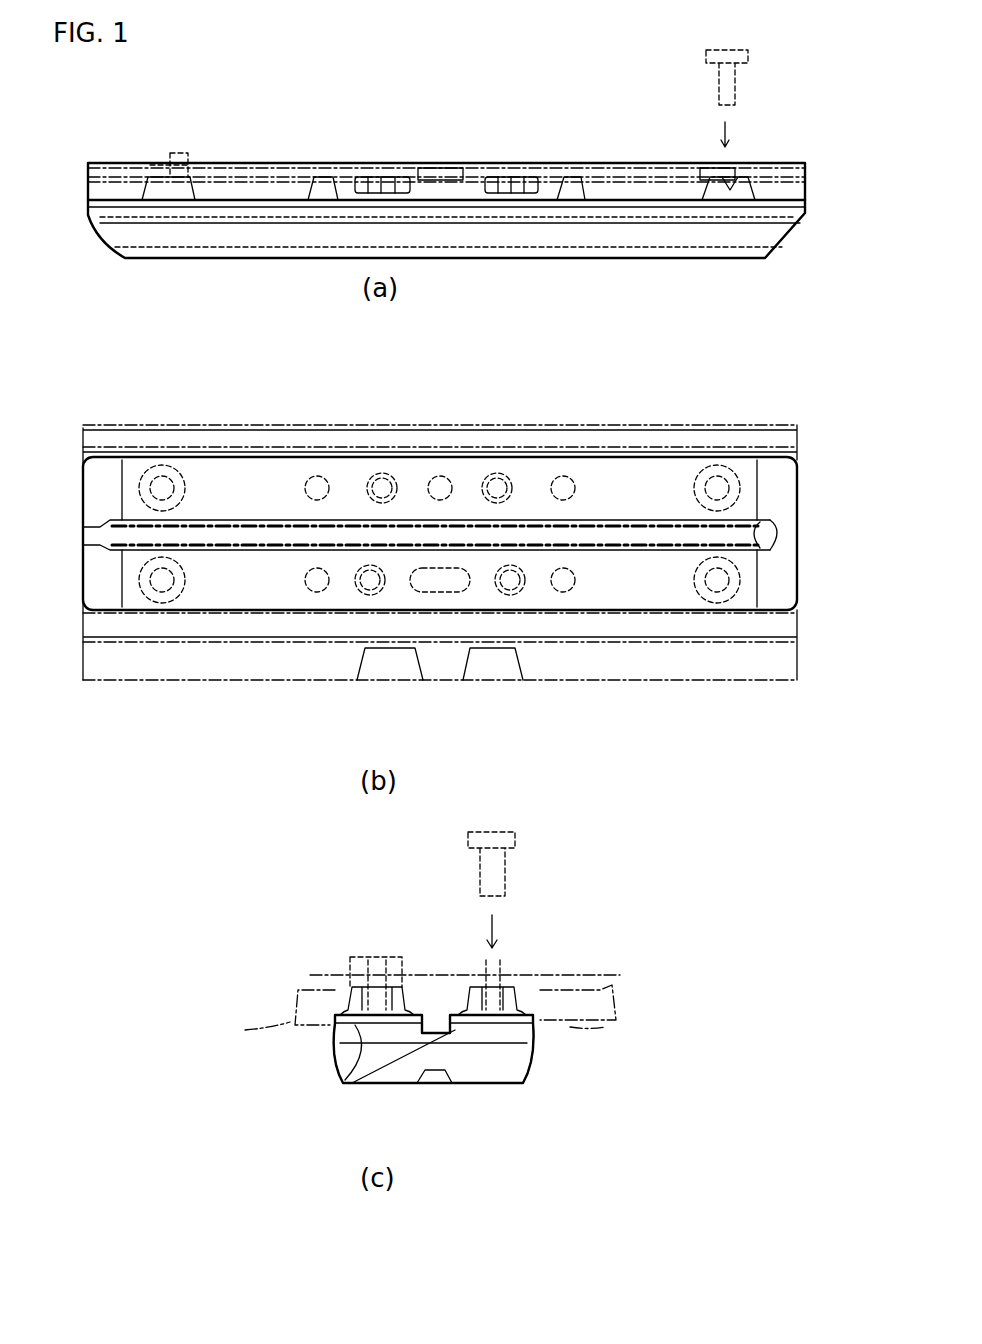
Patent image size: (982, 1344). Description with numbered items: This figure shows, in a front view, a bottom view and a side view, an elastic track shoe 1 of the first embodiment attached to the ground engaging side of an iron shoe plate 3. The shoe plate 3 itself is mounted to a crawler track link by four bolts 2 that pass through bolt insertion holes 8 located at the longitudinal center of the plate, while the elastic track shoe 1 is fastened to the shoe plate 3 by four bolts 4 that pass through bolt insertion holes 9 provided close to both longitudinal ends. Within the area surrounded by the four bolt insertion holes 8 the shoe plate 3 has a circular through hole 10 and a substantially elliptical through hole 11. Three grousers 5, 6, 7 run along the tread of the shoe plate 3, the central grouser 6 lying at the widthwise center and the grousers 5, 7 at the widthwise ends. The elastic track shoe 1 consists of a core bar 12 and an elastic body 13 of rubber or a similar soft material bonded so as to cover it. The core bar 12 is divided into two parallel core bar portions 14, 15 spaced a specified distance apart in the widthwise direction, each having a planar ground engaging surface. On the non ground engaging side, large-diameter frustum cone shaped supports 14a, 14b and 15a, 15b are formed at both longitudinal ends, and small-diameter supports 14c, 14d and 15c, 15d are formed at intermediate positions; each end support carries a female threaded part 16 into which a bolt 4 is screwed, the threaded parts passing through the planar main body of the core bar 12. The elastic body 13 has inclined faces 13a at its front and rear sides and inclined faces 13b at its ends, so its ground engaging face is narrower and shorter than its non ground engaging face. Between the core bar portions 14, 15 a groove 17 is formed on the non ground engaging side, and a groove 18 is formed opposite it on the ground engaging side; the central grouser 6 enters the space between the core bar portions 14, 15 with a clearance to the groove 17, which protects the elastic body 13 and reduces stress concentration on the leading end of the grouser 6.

The elastic track shoe 1 is at (689, 265).
The bolts 2 is at (487, 180).
The shoe plate 3 is at (633, 165).
The bolts 4 is at (175, 175).
The grouser 5 is at (296, 428).
The central grouser 6 is at (262, 535).
The grouser 7 is at (195, 640).
The bolt insertion holes 8 is at (375, 185).
The bolt insertion holes 9 is at (381, 985).
The circular through hole 10 is at (440, 476).
The substantially elliptical through hole 11 is at (440, 595).
The core bar 12 is at (262, 1128).
The elastic body 13 is at (552, 240).
The inclined faces 13a is at (116, 245).
The inclined faces 13b is at (335, 1057).
The core bar portion 14 is at (345, 1062).
The support 14a is at (166, 482).
The support 14b is at (750, 478).
The support 14c is at (319, 476).
The support 14d is at (564, 476).
The core bar portion 15 is at (782, 222).
The support 15a is at (143, 197).
The support 15b is at (773, 192).
The support 15c is at (318, 178).
The support 15d is at (572, 178).
The female threaded part 16 is at (732, 185).
The groove 17 is at (424, 1015).
The groove 18 is at (770, 530).